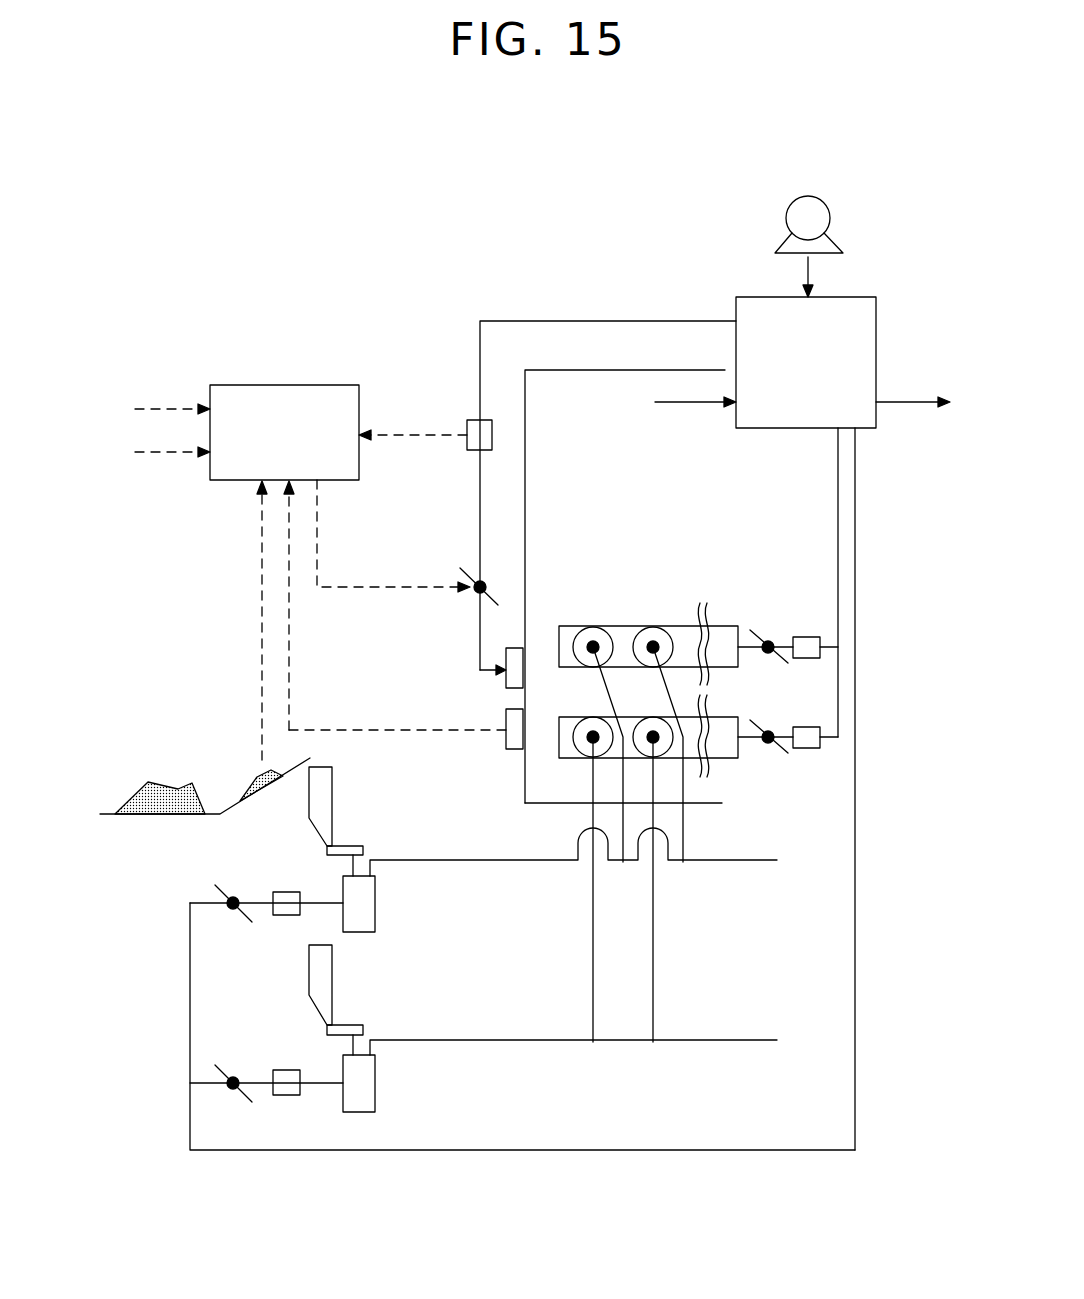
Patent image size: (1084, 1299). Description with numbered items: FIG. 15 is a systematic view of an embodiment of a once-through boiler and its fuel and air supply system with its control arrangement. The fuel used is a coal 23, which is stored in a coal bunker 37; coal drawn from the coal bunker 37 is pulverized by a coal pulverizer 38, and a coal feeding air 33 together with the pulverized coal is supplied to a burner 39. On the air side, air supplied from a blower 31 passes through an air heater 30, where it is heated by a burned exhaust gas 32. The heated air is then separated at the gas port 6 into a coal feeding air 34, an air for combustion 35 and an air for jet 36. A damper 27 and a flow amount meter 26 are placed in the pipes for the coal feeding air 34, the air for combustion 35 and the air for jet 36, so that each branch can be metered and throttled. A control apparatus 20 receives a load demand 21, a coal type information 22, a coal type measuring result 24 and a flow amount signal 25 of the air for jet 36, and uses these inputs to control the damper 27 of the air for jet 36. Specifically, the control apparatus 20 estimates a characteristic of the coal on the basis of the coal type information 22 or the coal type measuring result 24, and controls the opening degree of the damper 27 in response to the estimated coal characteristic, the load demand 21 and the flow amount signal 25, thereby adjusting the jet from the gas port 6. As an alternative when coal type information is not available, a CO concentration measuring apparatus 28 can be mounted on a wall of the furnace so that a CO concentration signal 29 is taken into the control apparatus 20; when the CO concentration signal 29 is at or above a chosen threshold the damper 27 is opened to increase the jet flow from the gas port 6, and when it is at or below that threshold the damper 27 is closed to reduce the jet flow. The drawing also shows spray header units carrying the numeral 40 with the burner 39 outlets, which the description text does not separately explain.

The gas port 6 is at (517, 648).
The control apparatus 20 is at (284, 432).
The load demand 21 is at (149, 409).
The coal type information 22 is at (149, 452).
The coal 23 is at (143, 782).
The coal type measuring result 24 is at (255, 620).
The flow amount signal 25 is at (413, 416).
The flow amount meter 26 is at (463, 442).
The damper 27 is at (476, 596).
The CO concentration measuring apparatus 28 is at (512, 750).
The CO concentration signal 29 is at (397, 605).
The air heater 30 is at (806, 362).
The blower 31 is at (828, 246).
The burned exhaust gas 32 is at (684, 408).
The coal feeding air 33 is at (525, 866).
The coal feeding air 34 is at (522, 1027).
The air for combustion 35 is at (824, 789).
The air for jet 36 is at (552, 321).
The coal bunker 37 is at (333, 805).
The coal pulverizer 38 is at (376, 903).
The burner 39 is at (593, 626).
The spray headers 40 is at (633, 626).